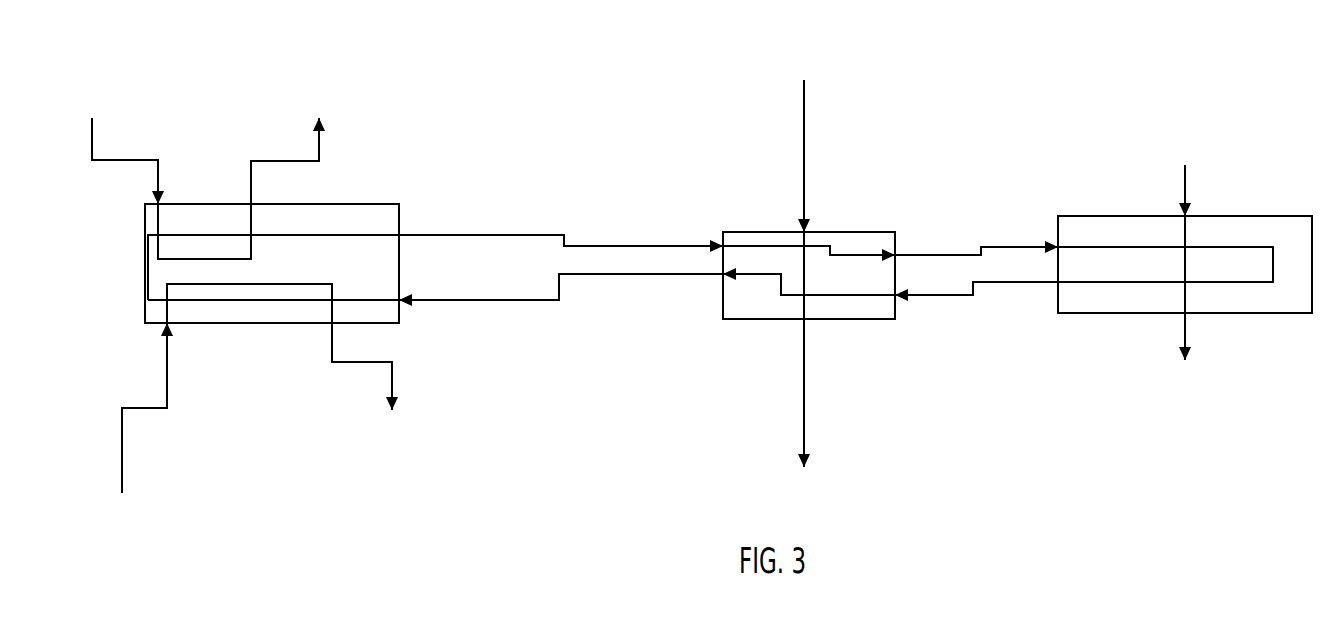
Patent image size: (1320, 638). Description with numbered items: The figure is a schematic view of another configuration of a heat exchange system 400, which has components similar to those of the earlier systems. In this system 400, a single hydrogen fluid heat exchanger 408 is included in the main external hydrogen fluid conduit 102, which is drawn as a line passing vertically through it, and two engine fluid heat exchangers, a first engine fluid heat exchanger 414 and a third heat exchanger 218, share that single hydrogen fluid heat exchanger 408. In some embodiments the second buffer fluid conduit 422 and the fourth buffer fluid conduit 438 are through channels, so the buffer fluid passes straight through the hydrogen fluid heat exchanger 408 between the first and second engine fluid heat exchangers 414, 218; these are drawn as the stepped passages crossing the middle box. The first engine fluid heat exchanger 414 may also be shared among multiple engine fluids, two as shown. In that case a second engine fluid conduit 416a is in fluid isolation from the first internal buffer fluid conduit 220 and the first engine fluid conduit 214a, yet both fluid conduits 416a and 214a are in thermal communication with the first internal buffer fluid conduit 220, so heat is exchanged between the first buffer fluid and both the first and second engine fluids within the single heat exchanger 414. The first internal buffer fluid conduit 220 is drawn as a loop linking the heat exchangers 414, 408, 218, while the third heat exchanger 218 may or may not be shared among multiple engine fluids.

The heat exchange system 400 is at (957, 58).
The main external hydrogen fluid conduit 102 is at (806, 157).
The first engine fluid conduit 214a is at (213, 259).
The first internal buffer fluid conduit 220 is at (380, 235).
The first engine fluid heat exchanger 414 is at (380, 203).
The second engine fluid conduit 416a is at (285, 284).
The hydrogen fluid heat exchanger 408 is at (860, 232).
The second buffer fluid conduit 422 is at (785, 245).
The fourth buffer fluid conduit 438 is at (760, 276).
The third heat exchanger 218 is at (1230, 216).